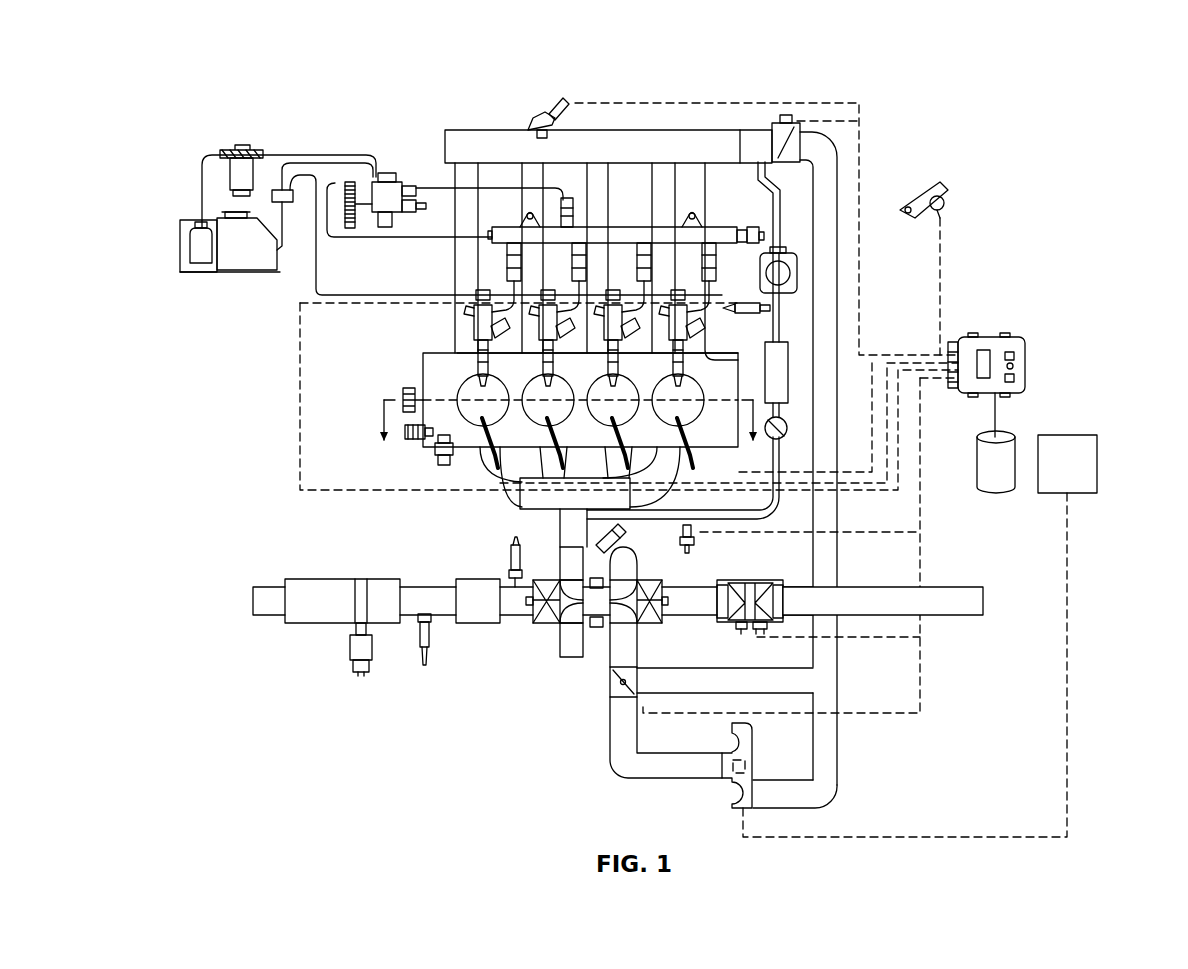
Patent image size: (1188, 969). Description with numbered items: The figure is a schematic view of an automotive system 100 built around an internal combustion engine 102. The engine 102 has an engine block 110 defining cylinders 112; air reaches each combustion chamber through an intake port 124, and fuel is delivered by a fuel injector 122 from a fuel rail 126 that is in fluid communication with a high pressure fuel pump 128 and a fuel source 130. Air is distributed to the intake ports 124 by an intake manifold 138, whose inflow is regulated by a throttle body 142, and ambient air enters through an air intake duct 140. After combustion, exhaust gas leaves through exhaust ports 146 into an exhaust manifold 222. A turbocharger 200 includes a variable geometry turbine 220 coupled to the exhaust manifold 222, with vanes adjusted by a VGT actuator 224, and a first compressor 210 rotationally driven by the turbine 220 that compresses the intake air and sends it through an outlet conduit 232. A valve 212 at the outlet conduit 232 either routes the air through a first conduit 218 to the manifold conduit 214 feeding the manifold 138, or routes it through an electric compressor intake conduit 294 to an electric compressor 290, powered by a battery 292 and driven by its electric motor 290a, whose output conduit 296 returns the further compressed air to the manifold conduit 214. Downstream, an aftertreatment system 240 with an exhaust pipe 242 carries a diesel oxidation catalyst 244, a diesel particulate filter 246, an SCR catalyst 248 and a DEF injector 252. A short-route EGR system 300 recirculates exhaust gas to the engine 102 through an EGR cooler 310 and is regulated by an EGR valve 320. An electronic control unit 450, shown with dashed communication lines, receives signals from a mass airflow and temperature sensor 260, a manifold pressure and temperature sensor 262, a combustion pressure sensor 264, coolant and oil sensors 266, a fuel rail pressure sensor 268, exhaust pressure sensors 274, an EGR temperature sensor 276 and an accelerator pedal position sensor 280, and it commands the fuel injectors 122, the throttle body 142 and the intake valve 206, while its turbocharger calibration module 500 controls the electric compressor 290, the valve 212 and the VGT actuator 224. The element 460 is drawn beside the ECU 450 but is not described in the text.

The automotive system 100 is at (310, 115).
The internal combustion engine 102 is at (676, 125).
The engine block 110 is at (423, 358).
The cylinder 112 is at (708, 392).
The fuel injector 122 is at (475, 330).
The intake port 124 is at (457, 355).
The fuel rail 126 is at (492, 235).
The high pressure fuel pump 128 is at (388, 175).
The fuel source 130 is at (240, 272).
The intake manifold 138 is at (587, 137).
The air intake duct 140 is at (955, 605).
The throttle body 142 is at (787, 115).
The exhaust port 146 is at (478, 457).
The turbocharger 200 is at (600, 639).
The intake valve 206 is at (790, 583).
The first compressor 210 is at (610, 648).
The valve 212 is at (612, 688).
The manifold conduit 214 is at (838, 655).
The first conduit 218 is at (760, 630).
The turbine 220 is at (565, 635).
The exhaust manifold 222 is at (573, 510).
The VGT actuator 224 is at (627, 540).
The outlet conduit 232 is at (640, 662).
The aftertreatment system 240 is at (355, 636).
The exhaust pipe 242 is at (433, 585).
The diesel oxidation catalyst 244 is at (367, 587).
The diesel particulate filter 246 is at (318, 624).
The SCR catalyst 248 is at (488, 624).
The DEF injector 252 is at (360, 676).
The mass airflow and temperature sensor 260 is at (740, 630).
The manifold pressure and temperature sensor 262 is at (535, 122).
The combustion pressure sensor 264 is at (495, 462).
The coolant and oil temperature and level sensors 266 is at (413, 438).
The fuel rail pressure sensor 268 is at (750, 228).
The exhaust pressure sensor 274 is at (511, 565).
The EGR temperature sensor 276 is at (778, 312).
The accelerator pedal position sensor 280 is at (948, 190).
The electric compressor 290 is at (737, 808).
The electric motor 290a is at (730, 770).
The battery 292 is at (1097, 455).
The electric compressor intake conduit 294 is at (612, 775).
The output conduit 296 is at (790, 808).
The EGR system 300 is at (750, 587).
The EGR cooler 310 is at (776, 370).
The EGR valve 320 is at (782, 248).
The electronic control unit 450 is at (1025, 337).
The memory 460 is at (998, 490).
The turbocharger calibration module 500 is at (985, 355).